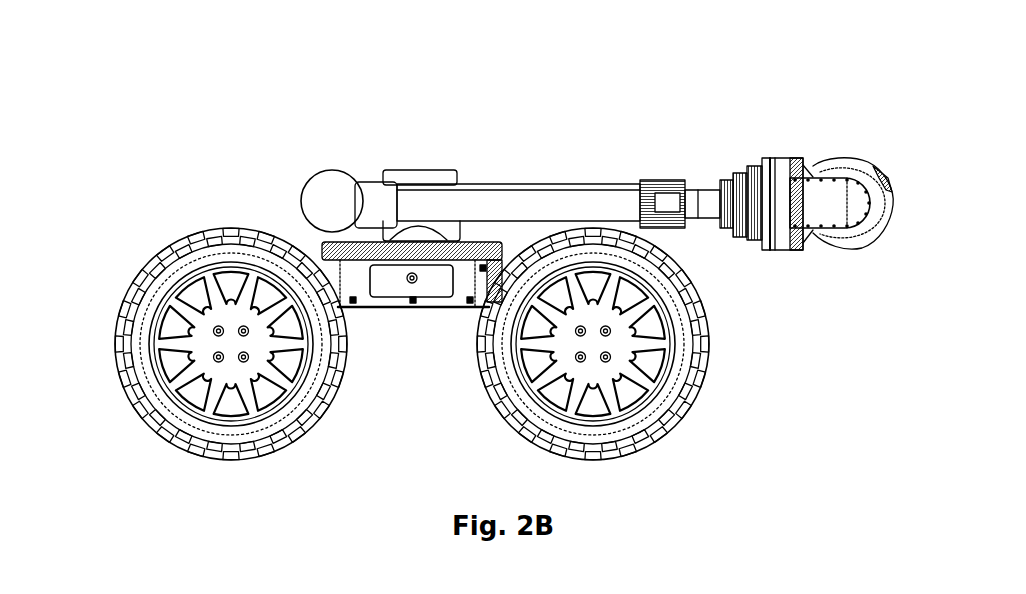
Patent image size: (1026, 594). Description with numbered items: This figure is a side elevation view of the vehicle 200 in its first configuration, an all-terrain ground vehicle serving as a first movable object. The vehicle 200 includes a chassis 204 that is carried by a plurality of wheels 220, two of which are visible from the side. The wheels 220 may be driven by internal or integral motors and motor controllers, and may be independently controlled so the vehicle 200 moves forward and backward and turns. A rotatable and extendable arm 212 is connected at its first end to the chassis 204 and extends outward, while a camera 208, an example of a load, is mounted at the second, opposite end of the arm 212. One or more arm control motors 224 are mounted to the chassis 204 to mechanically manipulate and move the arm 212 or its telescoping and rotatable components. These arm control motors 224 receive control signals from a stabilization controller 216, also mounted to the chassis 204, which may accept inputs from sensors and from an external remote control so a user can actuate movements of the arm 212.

The vehicle 200 is at (126, 116).
The chassis 204 is at (320, 250).
The camera 208 is at (840, 237).
The arm 212 is at (695, 187).
The stabilization controller 216 is at (425, 283).
The wheels 220 is at (150, 253).
The arm control motors 224 is at (427, 170).